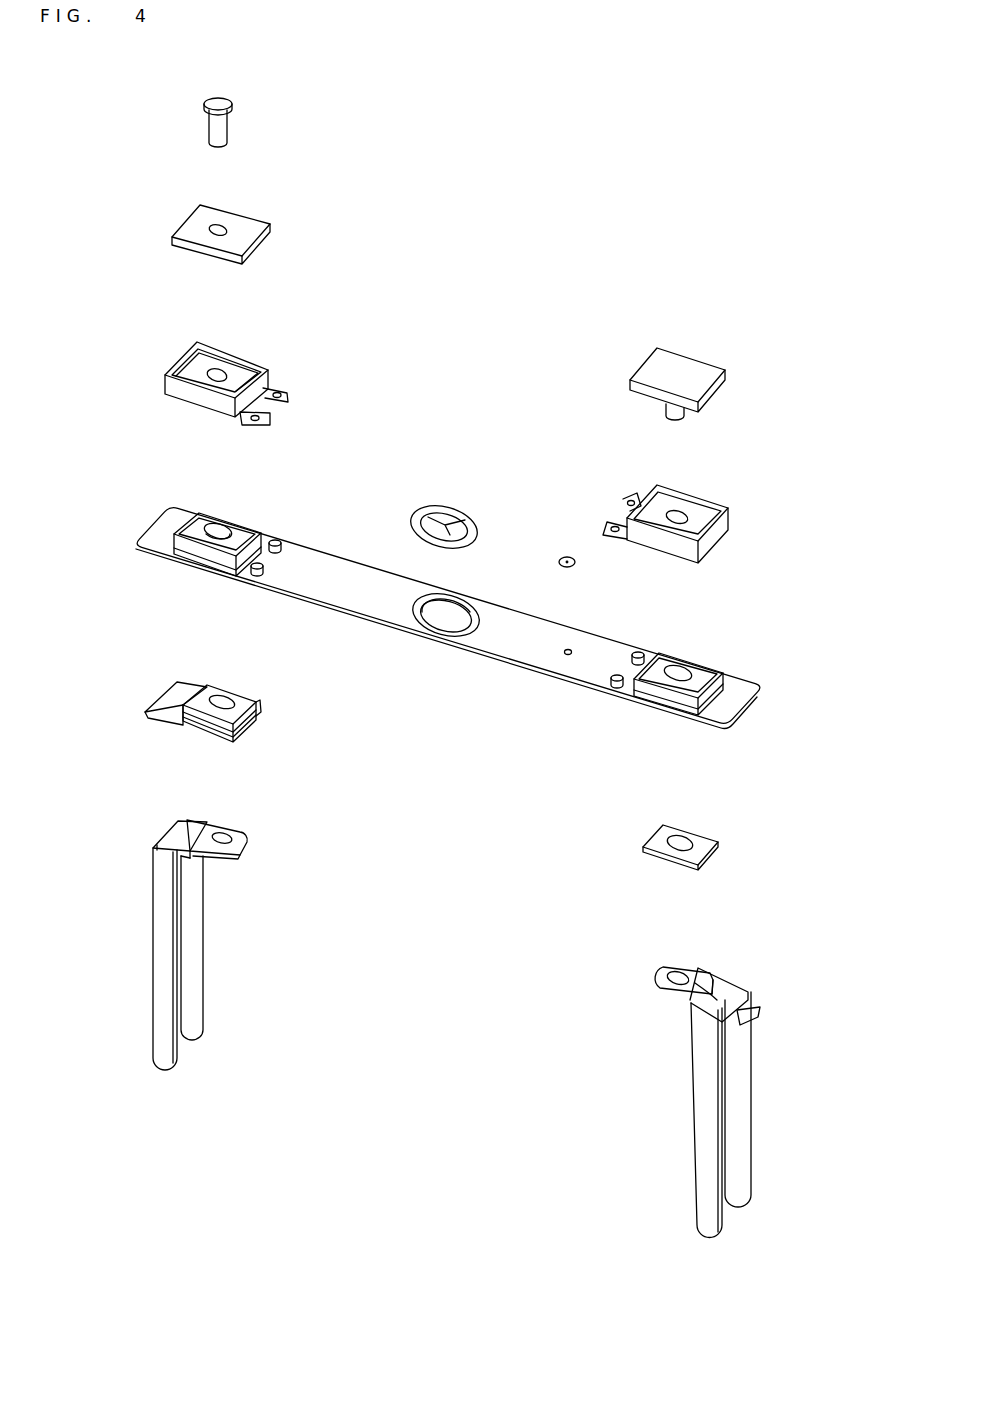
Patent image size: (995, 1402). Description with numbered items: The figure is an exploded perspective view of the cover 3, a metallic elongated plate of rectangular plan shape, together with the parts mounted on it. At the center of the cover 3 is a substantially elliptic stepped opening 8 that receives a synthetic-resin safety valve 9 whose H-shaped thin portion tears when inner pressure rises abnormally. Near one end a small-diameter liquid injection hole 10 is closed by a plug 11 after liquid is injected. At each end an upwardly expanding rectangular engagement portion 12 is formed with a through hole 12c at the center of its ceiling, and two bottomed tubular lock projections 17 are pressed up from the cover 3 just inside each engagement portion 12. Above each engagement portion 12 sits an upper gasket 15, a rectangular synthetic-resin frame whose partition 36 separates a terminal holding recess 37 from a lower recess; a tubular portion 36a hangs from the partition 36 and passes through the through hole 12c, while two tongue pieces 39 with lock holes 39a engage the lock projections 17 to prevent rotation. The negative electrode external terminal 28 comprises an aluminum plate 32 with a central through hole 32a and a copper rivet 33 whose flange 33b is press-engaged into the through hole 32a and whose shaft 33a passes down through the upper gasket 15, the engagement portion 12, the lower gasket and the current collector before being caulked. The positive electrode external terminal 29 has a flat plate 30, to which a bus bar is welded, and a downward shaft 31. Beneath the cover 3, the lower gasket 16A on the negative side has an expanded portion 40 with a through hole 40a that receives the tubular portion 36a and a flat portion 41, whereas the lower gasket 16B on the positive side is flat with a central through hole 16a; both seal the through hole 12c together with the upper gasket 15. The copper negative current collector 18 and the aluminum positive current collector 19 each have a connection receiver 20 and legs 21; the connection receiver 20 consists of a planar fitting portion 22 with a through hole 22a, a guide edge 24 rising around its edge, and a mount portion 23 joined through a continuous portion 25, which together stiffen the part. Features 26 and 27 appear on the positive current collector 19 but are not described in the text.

The cover 3 is at (340, 570).
The opening 8 is at (456, 603).
The safety valve 9 is at (440, 507).
The liquid injection hole 10 is at (568, 648).
The plug 11 is at (568, 557).
The engagement portion 12 is at (464, 580).
The through hole 12c is at (222, 520).
The upper gasket 15 is at (469, 434).
The lower gasket on the negative electrode side 16A is at (272, 674).
The lower gasket on the positive electrode side 16B is at (606, 820).
The through hole 16a is at (700, 816).
The lock projection 17 is at (282, 538).
The negative current collector 18 is at (400, 913).
The positive current collector 19 is at (652, 1085).
The connection receiver 20 is at (250, 836).
The legs 21 is at (160, 930).
The fitting portion 22 is at (205, 820).
The through hole 22a is at (225, 826).
The mount portion 23 is at (180, 822).
The guide edge 24 is at (250, 850).
The continuous portion 25 is at (205, 860).
The plate portion 26 is at (717, 976).
The projection 27 is at (758, 1006).
The negative electrode external terminal 28 is at (391, 118).
The positive electrode external terminal 29 is at (575, 384).
The flat plate 30 is at (632, 378).
The shaft 31 is at (668, 414).
The aluminum plate 32 is at (280, 222).
The through hole 32a is at (220, 226).
The rivet 33 is at (295, 122).
The shaft 33a is at (227, 122).
The flange 33b is at (243, 101).
The partition 36 is at (186, 372).
The tubular portion 36a is at (210, 367).
The terminal holding recess 37 is at (240, 358).
The tongue piece 39 is at (280, 408).
The lock hole 39a is at (290, 394).
The expanded portion 40 is at (205, 685).
The through hole 40a is at (220, 688).
The flat portion 41 is at (160, 705).